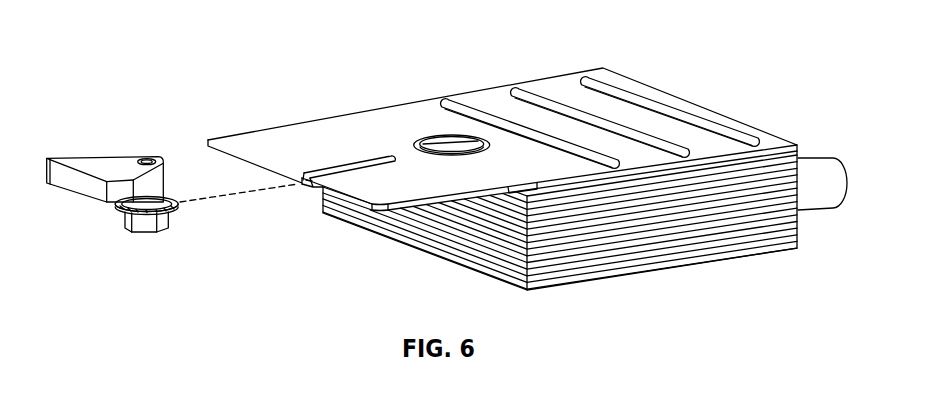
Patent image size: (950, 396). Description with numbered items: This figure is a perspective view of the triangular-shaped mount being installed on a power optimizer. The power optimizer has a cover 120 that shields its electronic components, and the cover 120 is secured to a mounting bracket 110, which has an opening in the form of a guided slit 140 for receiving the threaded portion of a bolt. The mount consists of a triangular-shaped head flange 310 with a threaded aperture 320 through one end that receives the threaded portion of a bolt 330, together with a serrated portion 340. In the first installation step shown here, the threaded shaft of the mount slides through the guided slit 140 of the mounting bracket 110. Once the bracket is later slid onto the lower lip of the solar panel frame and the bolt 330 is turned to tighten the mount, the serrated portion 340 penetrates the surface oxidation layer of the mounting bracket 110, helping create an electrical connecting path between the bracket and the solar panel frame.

The mounting bracket 110 is at (384, 109).
The cover 120 is at (633, 44).
The guided slit 140 is at (348, 160).
The triangular-shaped head flange 310 is at (97, 156).
The threaded aperture 320 is at (149, 158).
The bolt 330 is at (141, 233).
The serrated portion 340 is at (115, 209).